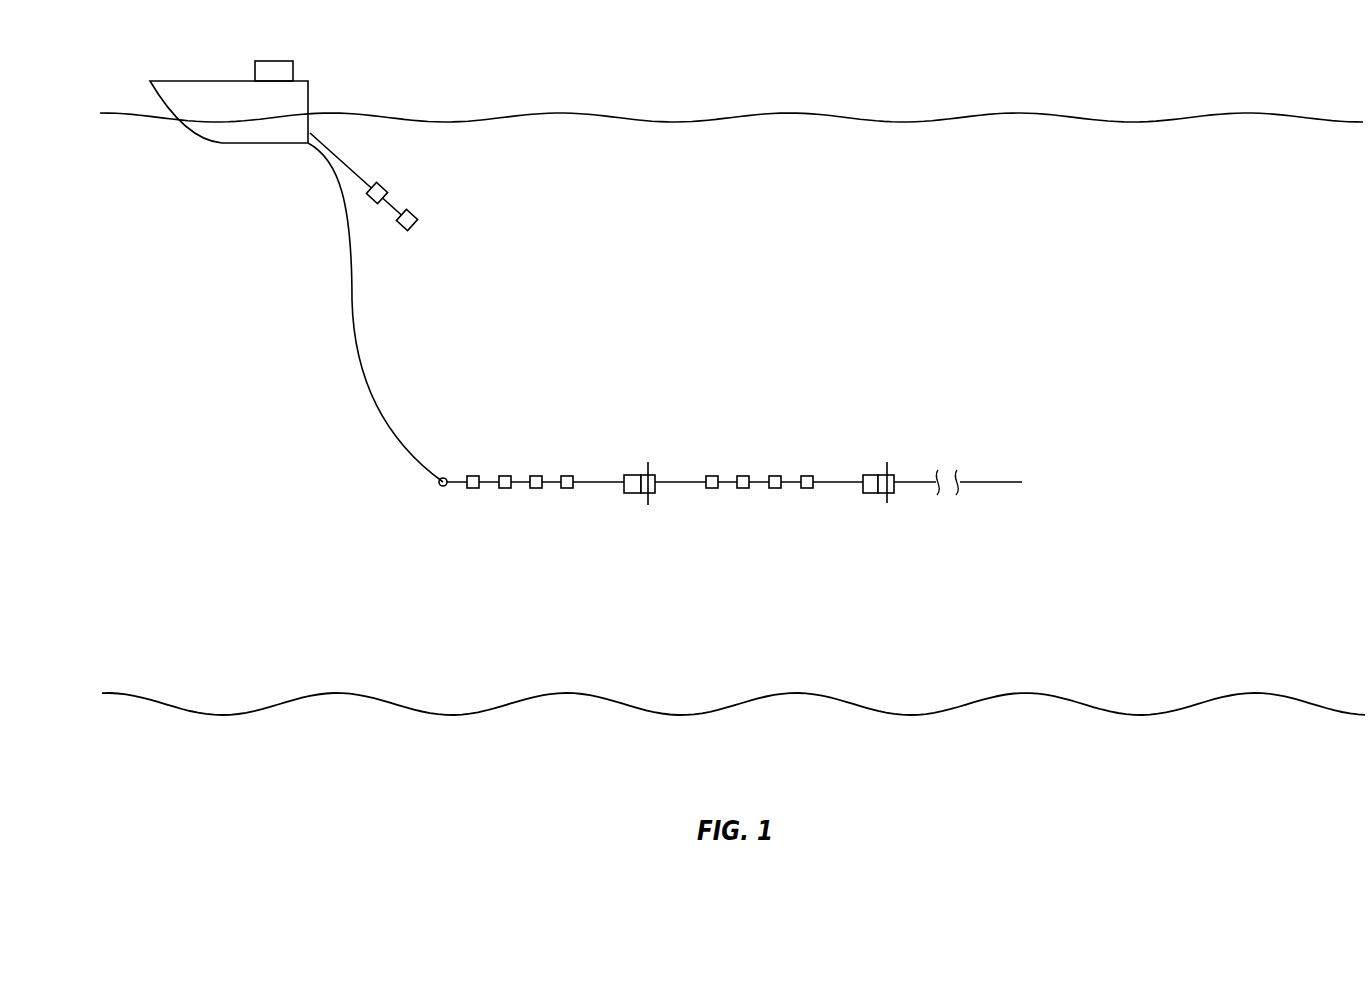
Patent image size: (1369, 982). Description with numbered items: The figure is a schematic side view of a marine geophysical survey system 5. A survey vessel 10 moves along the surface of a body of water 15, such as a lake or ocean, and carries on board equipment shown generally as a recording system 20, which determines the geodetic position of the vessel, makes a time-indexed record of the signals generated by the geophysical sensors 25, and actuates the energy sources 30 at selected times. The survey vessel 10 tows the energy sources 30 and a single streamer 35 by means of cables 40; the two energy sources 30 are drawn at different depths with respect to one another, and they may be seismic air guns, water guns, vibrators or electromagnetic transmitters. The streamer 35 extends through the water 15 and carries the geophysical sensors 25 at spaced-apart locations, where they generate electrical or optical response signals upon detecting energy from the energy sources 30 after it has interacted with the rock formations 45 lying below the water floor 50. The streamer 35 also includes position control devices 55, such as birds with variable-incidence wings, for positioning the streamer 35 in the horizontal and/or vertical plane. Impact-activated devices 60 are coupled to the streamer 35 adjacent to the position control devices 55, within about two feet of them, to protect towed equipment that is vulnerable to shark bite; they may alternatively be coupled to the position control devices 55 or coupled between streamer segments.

The marine geophysical survey system 5 is at (287, 290).
The survey vessel 10 is at (312, 90).
The body of water 15 is at (792, 113).
The recording system 20 is at (273, 61).
The geophysical sensors 25 is at (473, 488).
The energy sources 30 is at (384, 184).
The streamer 35 is at (763, 413).
The cables 40 is at (343, 160).
The rock formations 45 is at (355, 746).
The water floor 50 is at (335, 693).
The position control devices 55 is at (653, 475).
The impact-activated devices 60 is at (623, 475).